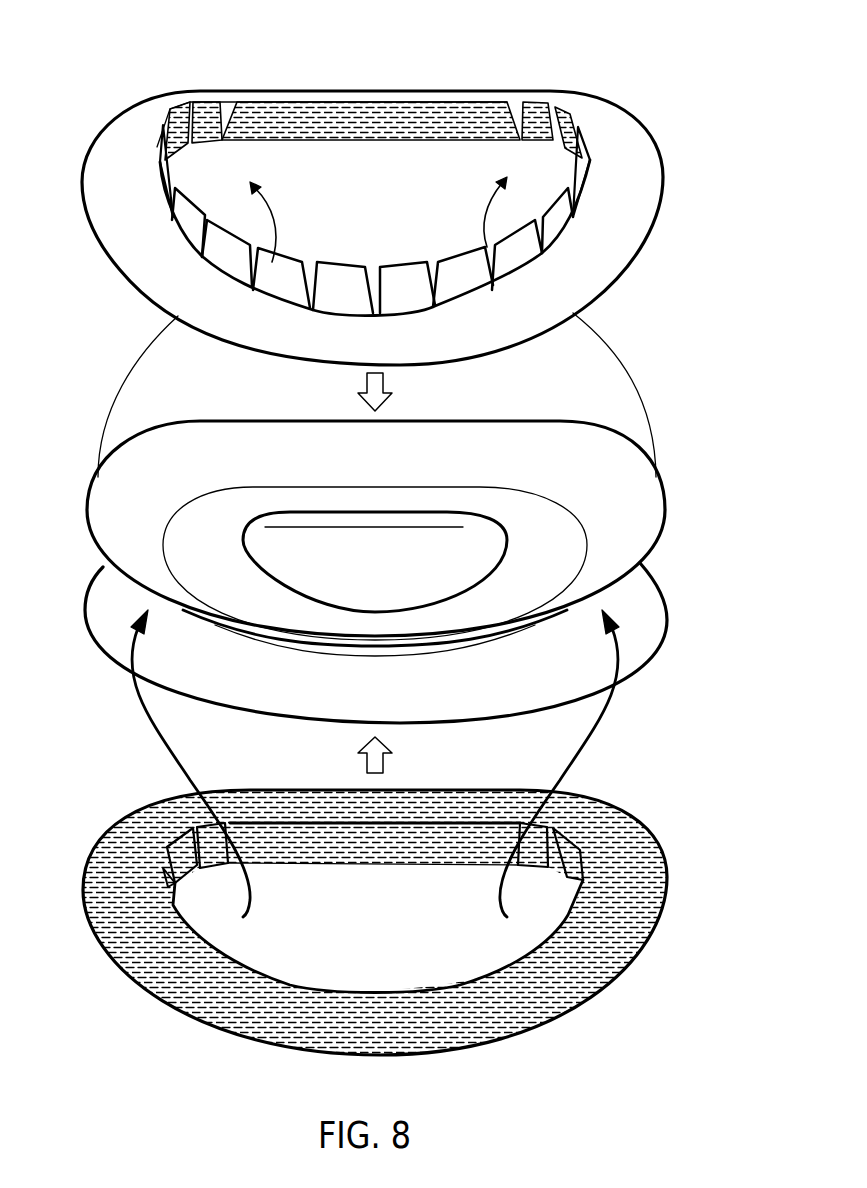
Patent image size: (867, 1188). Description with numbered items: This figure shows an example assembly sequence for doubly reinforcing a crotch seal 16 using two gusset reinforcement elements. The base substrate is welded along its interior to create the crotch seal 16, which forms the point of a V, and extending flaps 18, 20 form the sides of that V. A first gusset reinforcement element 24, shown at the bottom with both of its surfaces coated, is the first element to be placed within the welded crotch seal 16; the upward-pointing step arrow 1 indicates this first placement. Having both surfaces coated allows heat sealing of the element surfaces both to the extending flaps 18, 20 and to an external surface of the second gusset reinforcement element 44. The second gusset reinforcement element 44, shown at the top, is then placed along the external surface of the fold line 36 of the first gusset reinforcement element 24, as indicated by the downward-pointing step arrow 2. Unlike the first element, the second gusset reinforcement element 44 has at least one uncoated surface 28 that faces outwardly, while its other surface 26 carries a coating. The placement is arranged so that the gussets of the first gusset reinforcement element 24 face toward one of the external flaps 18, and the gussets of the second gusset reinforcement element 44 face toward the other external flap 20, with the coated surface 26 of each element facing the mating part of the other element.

The second gusset reinforcement element 44 is at (668, 107).
The uncoated surface 28 is at (108, 202).
The coated surface 26 is at (361, 117).
The extending flap 20 is at (652, 500).
The extending flap 18 is at (652, 618).
The crotch seal 16 is at (240, 640).
The first gusset reinforcement element 24 is at (684, 867).
The fold mark 36 is at (190, 840).
The first folding step arrow 1 is at (386, 755).
The second folding step arrow 2 is at (386, 392).